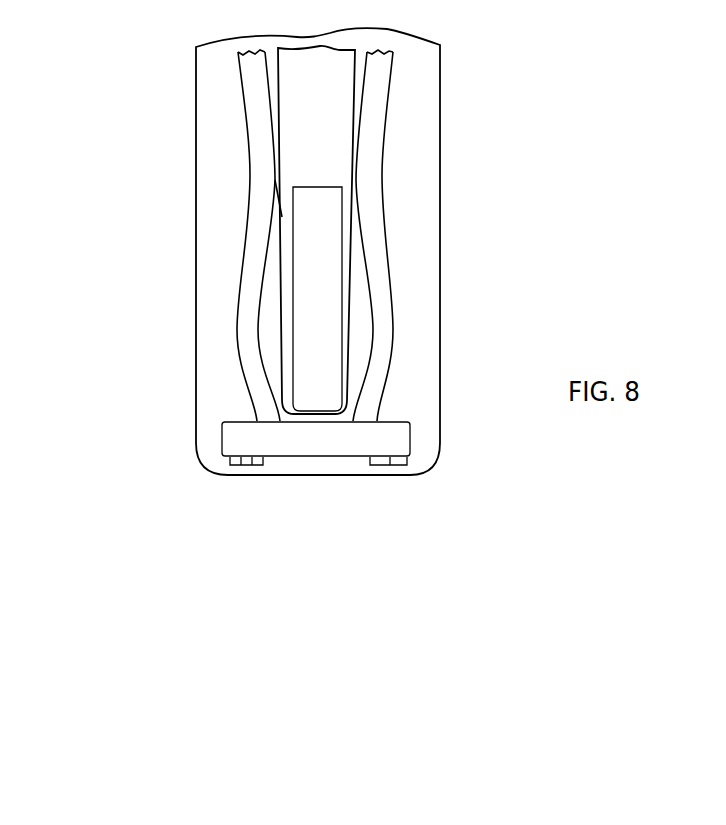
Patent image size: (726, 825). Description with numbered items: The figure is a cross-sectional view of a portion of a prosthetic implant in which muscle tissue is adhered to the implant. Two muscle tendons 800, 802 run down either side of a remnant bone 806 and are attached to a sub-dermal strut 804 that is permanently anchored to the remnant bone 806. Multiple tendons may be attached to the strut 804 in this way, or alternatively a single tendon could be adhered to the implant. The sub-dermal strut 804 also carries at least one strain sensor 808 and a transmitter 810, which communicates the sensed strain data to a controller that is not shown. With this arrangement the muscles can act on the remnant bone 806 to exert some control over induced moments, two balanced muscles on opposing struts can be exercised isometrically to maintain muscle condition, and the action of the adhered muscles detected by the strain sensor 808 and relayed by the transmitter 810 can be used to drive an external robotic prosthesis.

The muscle tendon 800 is at (260, 155).
The muscle tendon 802 is at (368, 195).
The sub-dermal strut 804 is at (334, 448).
The remnant bone 806 is at (336, 350).
The strain sensor 808 is at (233, 463).
The transmitter 810 is at (252, 463).